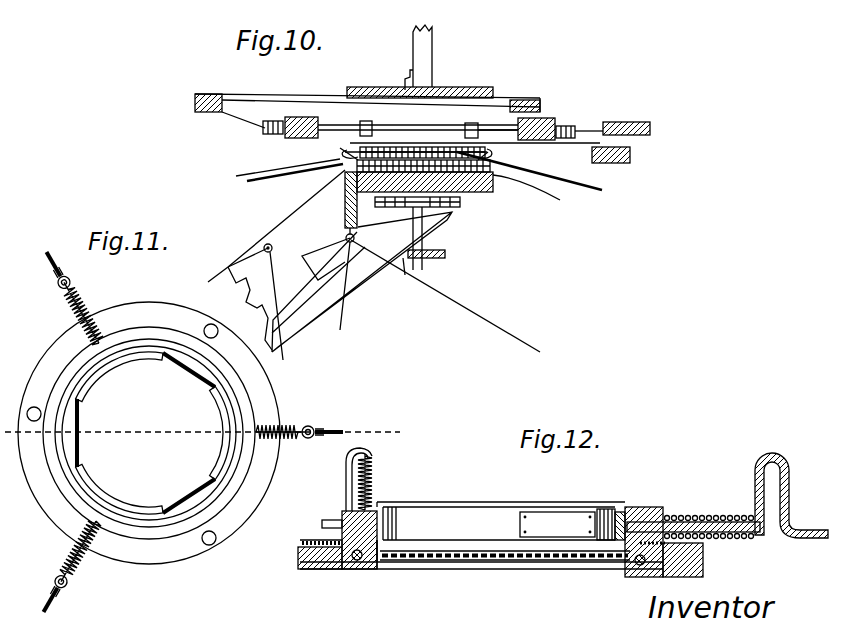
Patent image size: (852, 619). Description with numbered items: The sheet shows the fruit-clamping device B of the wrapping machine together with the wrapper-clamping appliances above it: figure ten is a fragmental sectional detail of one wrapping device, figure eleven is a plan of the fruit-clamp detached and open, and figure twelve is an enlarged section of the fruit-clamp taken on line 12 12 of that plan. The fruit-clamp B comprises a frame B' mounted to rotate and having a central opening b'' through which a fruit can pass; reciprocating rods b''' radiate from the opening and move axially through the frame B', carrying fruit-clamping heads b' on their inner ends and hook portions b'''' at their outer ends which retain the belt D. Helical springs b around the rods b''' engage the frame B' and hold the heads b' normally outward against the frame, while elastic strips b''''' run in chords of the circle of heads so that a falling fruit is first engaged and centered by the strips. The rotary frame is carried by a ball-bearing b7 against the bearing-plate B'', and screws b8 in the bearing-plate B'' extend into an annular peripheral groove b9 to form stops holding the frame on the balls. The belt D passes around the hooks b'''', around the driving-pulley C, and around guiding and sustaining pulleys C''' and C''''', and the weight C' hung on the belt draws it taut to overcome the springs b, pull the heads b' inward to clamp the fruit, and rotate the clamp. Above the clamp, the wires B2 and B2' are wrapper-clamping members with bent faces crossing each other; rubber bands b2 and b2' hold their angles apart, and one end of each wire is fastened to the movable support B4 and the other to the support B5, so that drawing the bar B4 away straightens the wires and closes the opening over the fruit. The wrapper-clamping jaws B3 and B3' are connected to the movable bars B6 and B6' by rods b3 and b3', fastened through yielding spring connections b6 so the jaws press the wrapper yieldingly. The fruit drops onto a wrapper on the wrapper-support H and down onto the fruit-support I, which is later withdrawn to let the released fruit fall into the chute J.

In FIG. 10, the wrapper-support H is at (475, 87).
In FIG. 10, the fruit-clamp B is at (279, 173).
In FIG. 11, the fruit-clamp B is at (149, 395).
In FIG. 12, the fruit-clamp B is at (481, 523).
In FIG. 10, the frame B' is at (423, 155).
In FIG. 11, the frame B' is at (158, 454).
In FIG. 12, the frame B' is at (367, 518).
In FIG. 10, the bearing-plate B'' is at (434, 187).
In FIG. 11, the bearing-plate B'' is at (149, 433).
In FIG. 12, the bearing-plate B'' is at (684, 566).
In FIG. 10, the wrapper-clamping member B2 is at (423, 157).
In FIG. 10, the wrapper-clamping member B2' is at (439, 160).
In FIG. 10, the wrapper-clamping jaw B3 is at (381, 119).
In FIG. 10, the wrapper-clamping jaw B3' is at (462, 120).
In FIG. 10, the movable support B4 is at (650, 128).
In FIG. 10, the support B5 is at (195, 102).
In FIG. 10, the movable bar B6 is at (561, 112).
In FIG. 10, the movable bar B6' is at (319, 116).
In FIG. 10, the spring b is at (410, 159).
In FIG. 11, the spring b is at (190, 435).
In FIG. 12, the spring b is at (530, 521).
In FIG. 11, the fruit-clamping head b' is at (153, 433).
In FIG. 11, the central opening b'' is at (149, 433).
In FIG. 12, the central opening b'' is at (505, 546).
In FIG. 11, the reciprocating rod b''' is at (168, 432).
In FIG. 12, the reciprocating rod b''' is at (791, 501).
In FIG. 10, the hook portion b'''' is at (506, 150).
In FIG. 11, the hook portion b'''' is at (200, 420).
In FIG. 12, the hook portion b'''' is at (337, 479).
In FIG. 11, the elastic strip b''''' is at (146, 433).
In FIG. 12, the elastic strip b''''' is at (572, 524).
In FIG. 10, the yielding means b2 is at (412, 277).
In FIG. 10, the yielding means b2' is at (445, 195).
In FIG. 10, the rod b3 is at (498, 117).
In FIG. 10, the rod b3' is at (335, 145).
In FIG. 10, the spring connection b6 is at (276, 134).
In FIG. 12, the ball-bearing b7 is at (385, 572).
In FIG. 12, the screw b8 is at (300, 560).
In FIG. 12, the annular peripheral groove b9 is at (352, 572).
In FIG. 10, the driving-pulley C is at (282, 260).
In FIG. 10, the weight C' is at (526, 184).
In FIG. 10, the guiding and sustaining pulley C''' is at (333, 279).
In FIG. 10, the guiding and sustaining pulley C''''' is at (272, 294).
In FIG. 10, the belt D is at (574, 190).
In FIG. 10, the fruit-support I is at (445, 253).
In FIG. 10, the chute J is at (380, 276).
In FIG. 11, the section line 12 is at (205, 433).